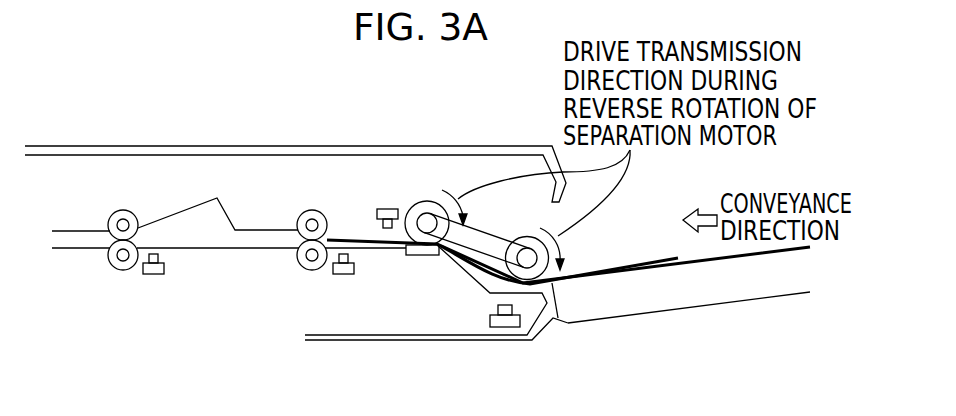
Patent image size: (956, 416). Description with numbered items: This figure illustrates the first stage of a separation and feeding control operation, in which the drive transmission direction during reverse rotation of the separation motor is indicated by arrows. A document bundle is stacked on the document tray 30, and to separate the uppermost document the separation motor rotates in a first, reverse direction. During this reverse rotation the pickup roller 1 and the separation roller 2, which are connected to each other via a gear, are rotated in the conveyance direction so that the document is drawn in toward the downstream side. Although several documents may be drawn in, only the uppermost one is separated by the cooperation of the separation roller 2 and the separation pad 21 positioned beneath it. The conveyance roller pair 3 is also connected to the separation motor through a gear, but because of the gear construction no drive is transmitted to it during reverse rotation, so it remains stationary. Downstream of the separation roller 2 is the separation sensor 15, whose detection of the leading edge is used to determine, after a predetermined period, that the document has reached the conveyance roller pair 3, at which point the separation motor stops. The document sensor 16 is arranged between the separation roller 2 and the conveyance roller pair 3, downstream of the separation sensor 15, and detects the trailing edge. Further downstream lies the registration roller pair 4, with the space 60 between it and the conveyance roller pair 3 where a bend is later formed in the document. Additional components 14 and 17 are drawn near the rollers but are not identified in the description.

The pickup roller 1 is at (527, 236).
The separation roller 2 is at (420, 201).
The conveyance roller pair 3 is at (313, 208).
The registration roller pair 4 is at (117, 208).
The sensor 14 is at (490, 320).
The separation sensor 15 is at (383, 207).
The document sensor 16 is at (343, 276).
The sensor 17 is at (155, 275).
The separation pad 21 is at (419, 258).
The document tray 30 is at (673, 303).
The space 60 is at (178, 210).